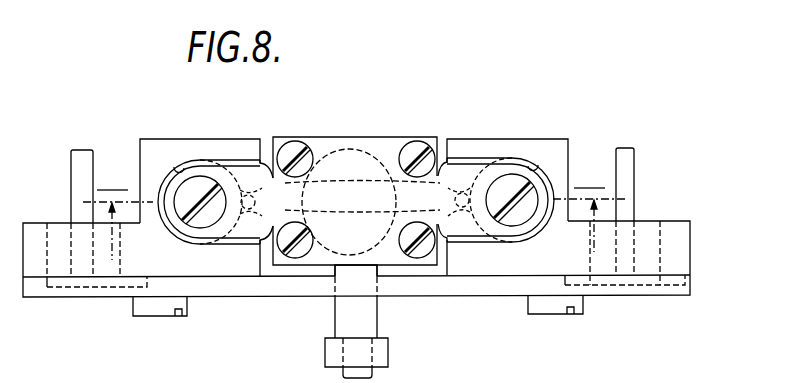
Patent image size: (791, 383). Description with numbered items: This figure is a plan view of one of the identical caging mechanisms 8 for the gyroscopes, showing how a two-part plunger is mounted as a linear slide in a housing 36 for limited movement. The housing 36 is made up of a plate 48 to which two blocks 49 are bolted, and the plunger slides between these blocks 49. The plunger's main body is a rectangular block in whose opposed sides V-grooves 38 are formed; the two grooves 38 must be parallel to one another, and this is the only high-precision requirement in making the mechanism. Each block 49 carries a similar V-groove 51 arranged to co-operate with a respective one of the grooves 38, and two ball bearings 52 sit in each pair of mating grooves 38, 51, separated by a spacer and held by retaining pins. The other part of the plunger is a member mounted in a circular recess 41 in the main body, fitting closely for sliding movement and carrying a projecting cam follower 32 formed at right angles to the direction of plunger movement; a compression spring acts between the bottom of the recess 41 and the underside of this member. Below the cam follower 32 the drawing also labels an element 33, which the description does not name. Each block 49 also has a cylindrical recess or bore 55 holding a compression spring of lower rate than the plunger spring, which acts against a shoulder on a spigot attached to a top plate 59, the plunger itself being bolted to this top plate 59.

The caging mechanism 8 is at (392, 128).
The cam follower 32 is at (363, 321).
The nut 33 is at (383, 355).
The housing 36 is at (240, 298).
The V-grooves 38 is at (355, 208).
The circular recess 41 is at (358, 146).
The plate 48 is at (300, 283).
The blocks 49 is at (225, 139).
The V-groove 51 is at (236, 243).
The ball bearings 52 is at (362, 192).
The cylindrical recess or bore 55 is at (173, 139).
The top plate 59 is at (323, 149).